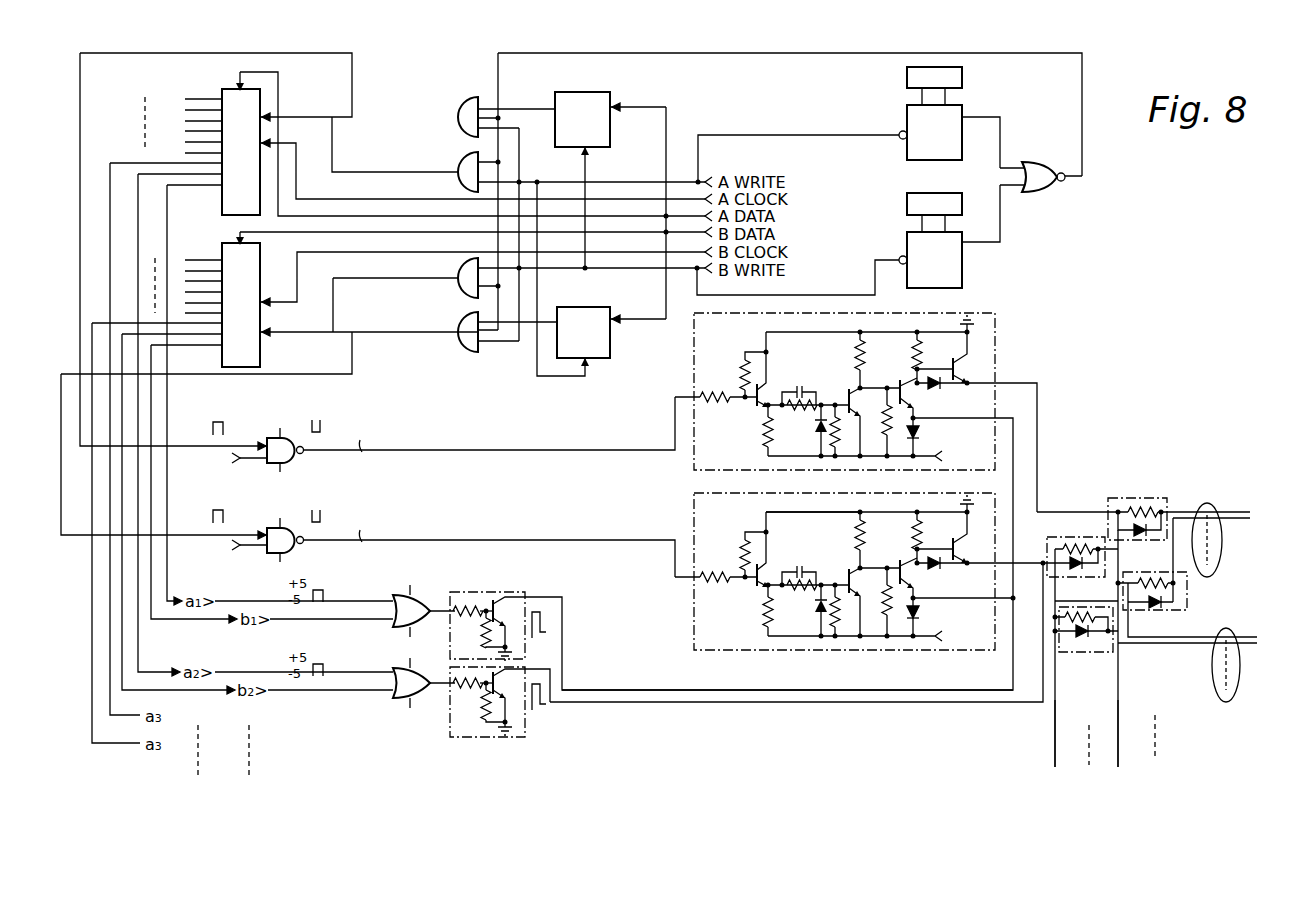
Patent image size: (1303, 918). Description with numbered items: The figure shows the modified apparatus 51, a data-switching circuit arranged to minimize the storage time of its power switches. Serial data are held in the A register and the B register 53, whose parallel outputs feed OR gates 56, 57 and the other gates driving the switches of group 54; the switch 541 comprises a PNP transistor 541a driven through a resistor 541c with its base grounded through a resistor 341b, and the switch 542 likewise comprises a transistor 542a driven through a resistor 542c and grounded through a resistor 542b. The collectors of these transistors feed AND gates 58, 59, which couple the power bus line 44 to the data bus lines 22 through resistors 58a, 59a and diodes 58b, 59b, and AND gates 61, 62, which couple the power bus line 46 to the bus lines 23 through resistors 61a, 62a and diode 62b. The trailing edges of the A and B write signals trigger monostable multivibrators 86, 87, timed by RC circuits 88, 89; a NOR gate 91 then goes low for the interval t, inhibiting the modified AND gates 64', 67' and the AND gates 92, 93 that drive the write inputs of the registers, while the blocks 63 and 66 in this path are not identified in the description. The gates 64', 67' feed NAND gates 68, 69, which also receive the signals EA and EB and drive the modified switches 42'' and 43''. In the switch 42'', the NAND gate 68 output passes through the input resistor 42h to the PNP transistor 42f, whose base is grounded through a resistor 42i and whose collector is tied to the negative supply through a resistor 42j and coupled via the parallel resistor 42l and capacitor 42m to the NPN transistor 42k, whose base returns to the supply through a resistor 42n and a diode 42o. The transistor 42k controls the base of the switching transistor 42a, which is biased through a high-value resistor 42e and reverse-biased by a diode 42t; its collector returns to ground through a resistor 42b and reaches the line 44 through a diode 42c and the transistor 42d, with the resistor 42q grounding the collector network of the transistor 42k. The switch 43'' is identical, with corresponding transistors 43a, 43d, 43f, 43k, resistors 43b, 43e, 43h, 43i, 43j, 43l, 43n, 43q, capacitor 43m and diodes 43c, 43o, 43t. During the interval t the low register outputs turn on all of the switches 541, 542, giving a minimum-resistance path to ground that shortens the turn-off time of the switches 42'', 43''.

The apparatus 51 is at (612, 12).
The B register 53 is at (220, 92).
The modified AND gate 64' is at (491, 103).
The AND gate 92 is at (465, 162).
The AND gate 93 is at (465, 273).
The modified AND gate 67' is at (487, 336).
The flip-flop 63 is at (610, 92).
The flip-flop 66 is at (592, 360).
The NAND gate 68 is at (272, 440).
The NAND gate 69 is at (272, 530).
The RC circuit 88 is at (964, 78).
The monostable multivibrator 86 is at (968, 166).
The RC circuit 89 is at (976, 207).
The monostable multivibrator 87 is at (964, 265).
The NOR gate 91 is at (1050, 185).
The modified switch 42'' is at (876, 390).
The capacitor 42m is at (815, 322).
The resistor 42b is at (920, 342).
The resistor 42i is at (742, 368).
The PNP transistor 42f is at (760, 392).
The NPN transistor 42k is at (848, 390).
The resistor 42q is at (888, 368).
The NPN transistor 42d is at (967, 360).
The diode 42c is at (945, 385).
The input resistor 42h is at (688, 398).
The resistor 42j is at (760, 435).
The resistor 42l is at (800, 410).
The NPN switching transistor 42a is at (905, 403).
The diode 42t is at (1000, 447).
The diode 42o is at (821, 456).
The resistor 42n is at (837, 455).
The resistor 42e is at (911, 448).
The modified switch 43'' is at (844, 588).
The capacitor 43m is at (813, 510).
The resistor 43b is at (898, 529).
The resistor 43i is at (734, 548).
The transistor 43f is at (803, 549).
The transistor 43k is at (836, 591).
The resistor 43q is at (855, 574).
The switching transistor 43a is at (894, 567).
The transistor 43d is at (942, 537).
The diode 43c is at (956, 576).
The input resistor 43h is at (696, 590).
The resistor 43j is at (743, 610).
The resistor 43l is at (797, 596).
The diode 43t is at (954, 609).
The diode 43o is at (801, 634).
The resistor 43n is at (846, 634).
The resistor 43e is at (903, 641).
The AND gate 61 is at (1105, 537).
The resistor 61a is at (1070, 547).
The power bus line 44 is at (1120, 760).
The AND gate 58 is at (1167, 500).
The resistor 58a is at (1143, 502).
The diode 58b is at (1145, 536).
The bus lines 22 is at (1222, 555).
The AND gate 59 is at (1190, 606).
The resistor 59a is at (1175, 578).
The diode 59b is at (1155, 608).
The AND gate 62 is at (1110, 660).
The resistor 62a is at (1070, 614).
The diode 62b is at (1080, 640).
The bus lines 23 is at (1238, 700).
The power bus line 46 is at (1050, 758).
The OR gate 56 is at (395, 622).
The OR gate 57 is at (395, 694).
The group of switches 54 is at (532, 572).
The switch 541 is at (527, 592).
The PNP transistor 541a is at (500, 603).
The resistor 541c is at (462, 605).
The resistor 341b is at (507, 647).
The switch 542 is at (510, 738).
The transistor 542a is at (512, 700).
The resistor 542b is at (488, 712).
The resistor 542c is at (468, 700).